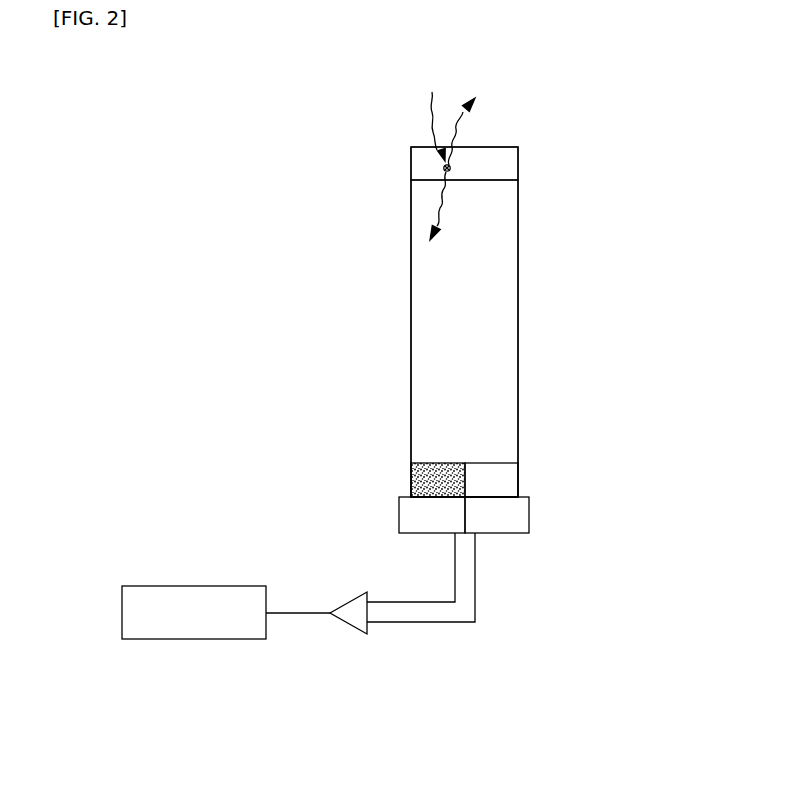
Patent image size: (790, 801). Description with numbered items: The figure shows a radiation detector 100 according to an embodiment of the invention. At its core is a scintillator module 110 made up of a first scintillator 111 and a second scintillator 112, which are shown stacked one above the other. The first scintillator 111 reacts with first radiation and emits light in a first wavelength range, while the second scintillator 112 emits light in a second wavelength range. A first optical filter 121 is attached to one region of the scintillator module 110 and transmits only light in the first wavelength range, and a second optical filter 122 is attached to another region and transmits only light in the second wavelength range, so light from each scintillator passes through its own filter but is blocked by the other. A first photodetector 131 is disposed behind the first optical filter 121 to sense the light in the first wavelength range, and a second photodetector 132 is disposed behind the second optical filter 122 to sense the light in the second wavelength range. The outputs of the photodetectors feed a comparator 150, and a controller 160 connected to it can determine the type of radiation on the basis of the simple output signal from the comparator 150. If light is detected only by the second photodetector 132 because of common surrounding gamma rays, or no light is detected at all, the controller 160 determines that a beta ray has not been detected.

The radiation detector 100 is at (570, 100).
The scintillator module 110 is at (551, 322).
The first scintillator 111 is at (518, 160).
The second scintillator 112 is at (625, 160).
The first optical filter 121 is at (411, 478).
The second optical filter 122 is at (518, 478).
The first photodetector 131 is at (437, 523).
The second photodetector 132 is at (498, 523).
The comparator 150 is at (350, 628).
The controller 160 is at (218, 639).